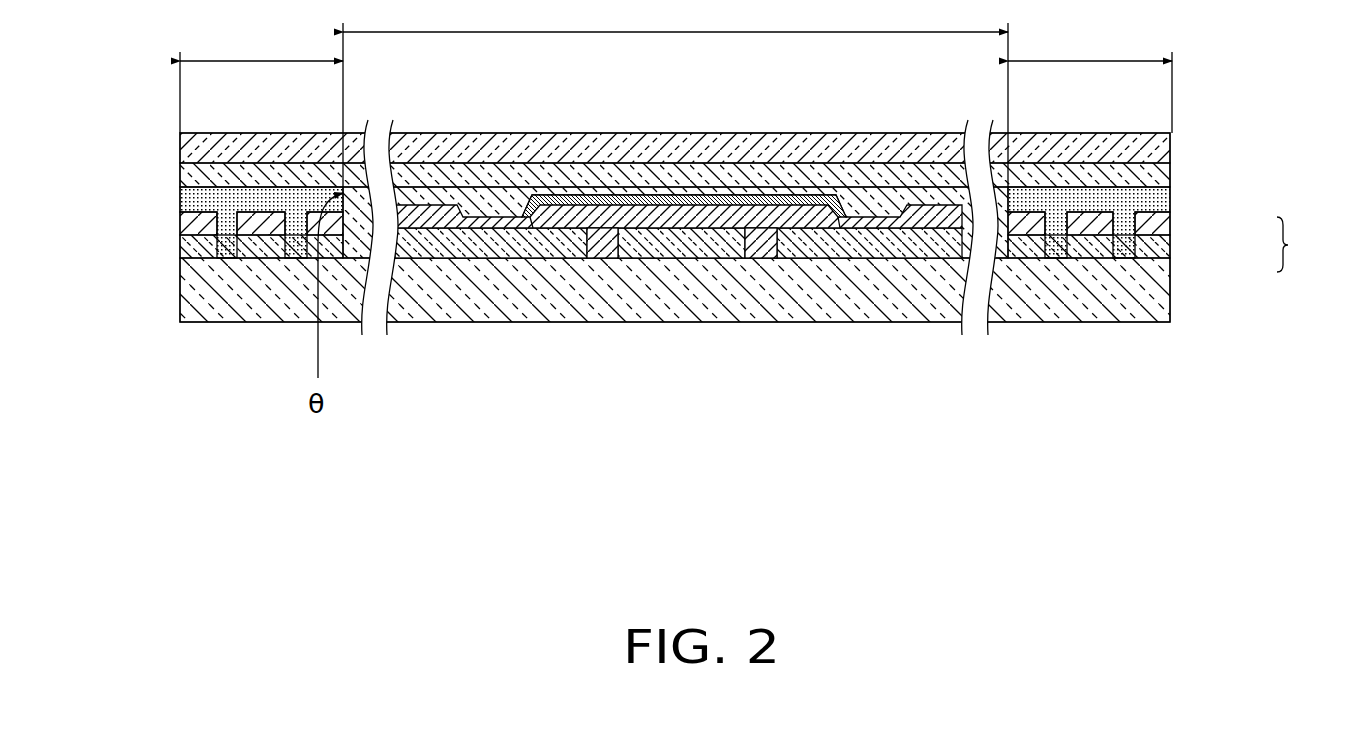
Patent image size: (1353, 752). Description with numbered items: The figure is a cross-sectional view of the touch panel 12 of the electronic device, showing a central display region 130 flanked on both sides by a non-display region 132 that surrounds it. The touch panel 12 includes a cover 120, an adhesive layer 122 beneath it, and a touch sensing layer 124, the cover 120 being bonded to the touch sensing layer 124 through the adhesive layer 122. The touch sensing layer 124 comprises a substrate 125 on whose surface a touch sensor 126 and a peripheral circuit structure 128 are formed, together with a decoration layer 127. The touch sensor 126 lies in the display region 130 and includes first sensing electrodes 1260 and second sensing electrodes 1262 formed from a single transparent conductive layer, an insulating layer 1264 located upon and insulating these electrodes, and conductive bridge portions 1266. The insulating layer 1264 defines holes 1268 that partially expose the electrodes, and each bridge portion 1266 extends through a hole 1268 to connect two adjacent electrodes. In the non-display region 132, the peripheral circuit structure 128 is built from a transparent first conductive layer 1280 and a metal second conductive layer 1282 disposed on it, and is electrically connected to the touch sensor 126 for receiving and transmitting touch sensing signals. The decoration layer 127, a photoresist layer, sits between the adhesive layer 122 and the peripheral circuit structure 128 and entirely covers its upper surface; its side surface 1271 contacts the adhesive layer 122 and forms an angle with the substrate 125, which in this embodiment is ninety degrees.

The touch panel 12 is at (168, 75).
The cover 120 is at (267, 148).
The adhesive layer 122 is at (207, 177).
The touch sensing layer 124 is at (173, 215).
The substrate 125 is at (197, 283).
The touch sensor 126 is at (678, 234).
The decoration layer 127 is at (1157, 200).
The peripheral circuit structure 128 is at (1308, 244).
The display region 130 is at (675, 93).
The non-display region 132 is at (676, 80).
The first sensing electrodes 1260 is at (560, 247).
The second sensing electrodes 1262 is at (688, 250).
The insulating layer 1264 is at (762, 255).
The bridge portions 1266 is at (806, 203).
The holes 1268 is at (458, 219).
The side surface 1271 is at (373, 336).
The first conductive layer 1280 is at (1160, 247).
The second conductive layer 1282 is at (1155, 231).